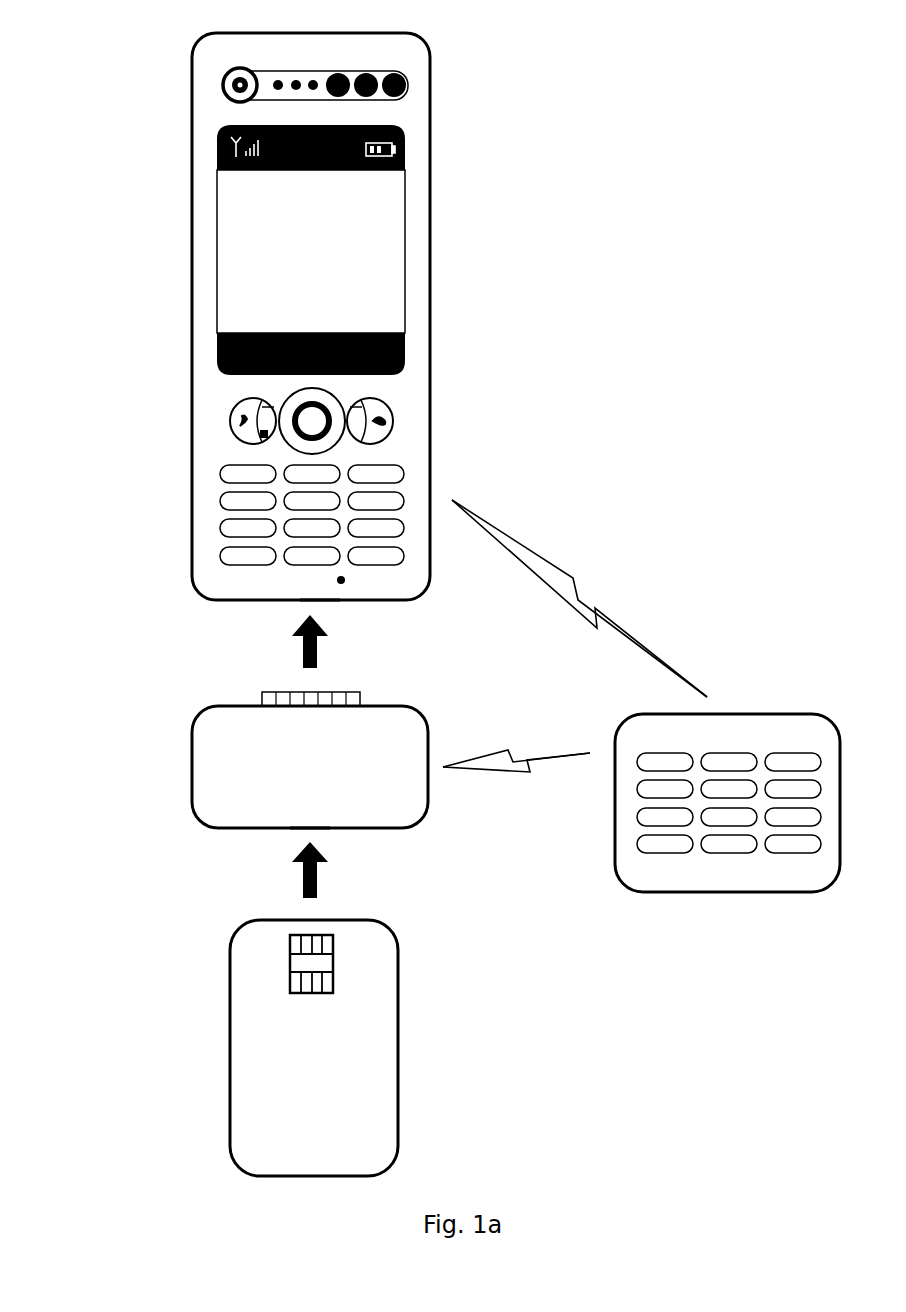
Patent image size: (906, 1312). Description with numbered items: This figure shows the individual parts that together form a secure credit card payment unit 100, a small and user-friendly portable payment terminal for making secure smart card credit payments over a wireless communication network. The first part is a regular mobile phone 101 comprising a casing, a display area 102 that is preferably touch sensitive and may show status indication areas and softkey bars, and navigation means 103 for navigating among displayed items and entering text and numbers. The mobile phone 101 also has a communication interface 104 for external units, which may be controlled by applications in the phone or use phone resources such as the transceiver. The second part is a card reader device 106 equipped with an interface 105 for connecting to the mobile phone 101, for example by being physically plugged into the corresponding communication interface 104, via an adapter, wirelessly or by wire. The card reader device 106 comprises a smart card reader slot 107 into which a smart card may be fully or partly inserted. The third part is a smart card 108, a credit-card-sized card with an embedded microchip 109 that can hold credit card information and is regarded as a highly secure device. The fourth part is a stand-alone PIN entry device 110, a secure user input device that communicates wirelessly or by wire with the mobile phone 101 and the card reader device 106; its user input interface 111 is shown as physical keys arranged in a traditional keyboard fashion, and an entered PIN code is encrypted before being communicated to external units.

The secure credit card payment unit 100 is at (117, 96).
The mobile phone 101 is at (418, 60).
The display area 102 is at (270, 275).
The navigation means 103 is at (238, 488).
The communication interface 104 is at (323, 600).
The interface 105 is at (358, 694).
The card reader device 106 is at (416, 754).
The smart card reader slot 107 is at (310, 828).
The smart card 108 is at (390, 1033).
The microchip 109 is at (320, 963).
The stand-alone PIN entry device 110 is at (730, 714).
The user input interface 111 is at (635, 803).